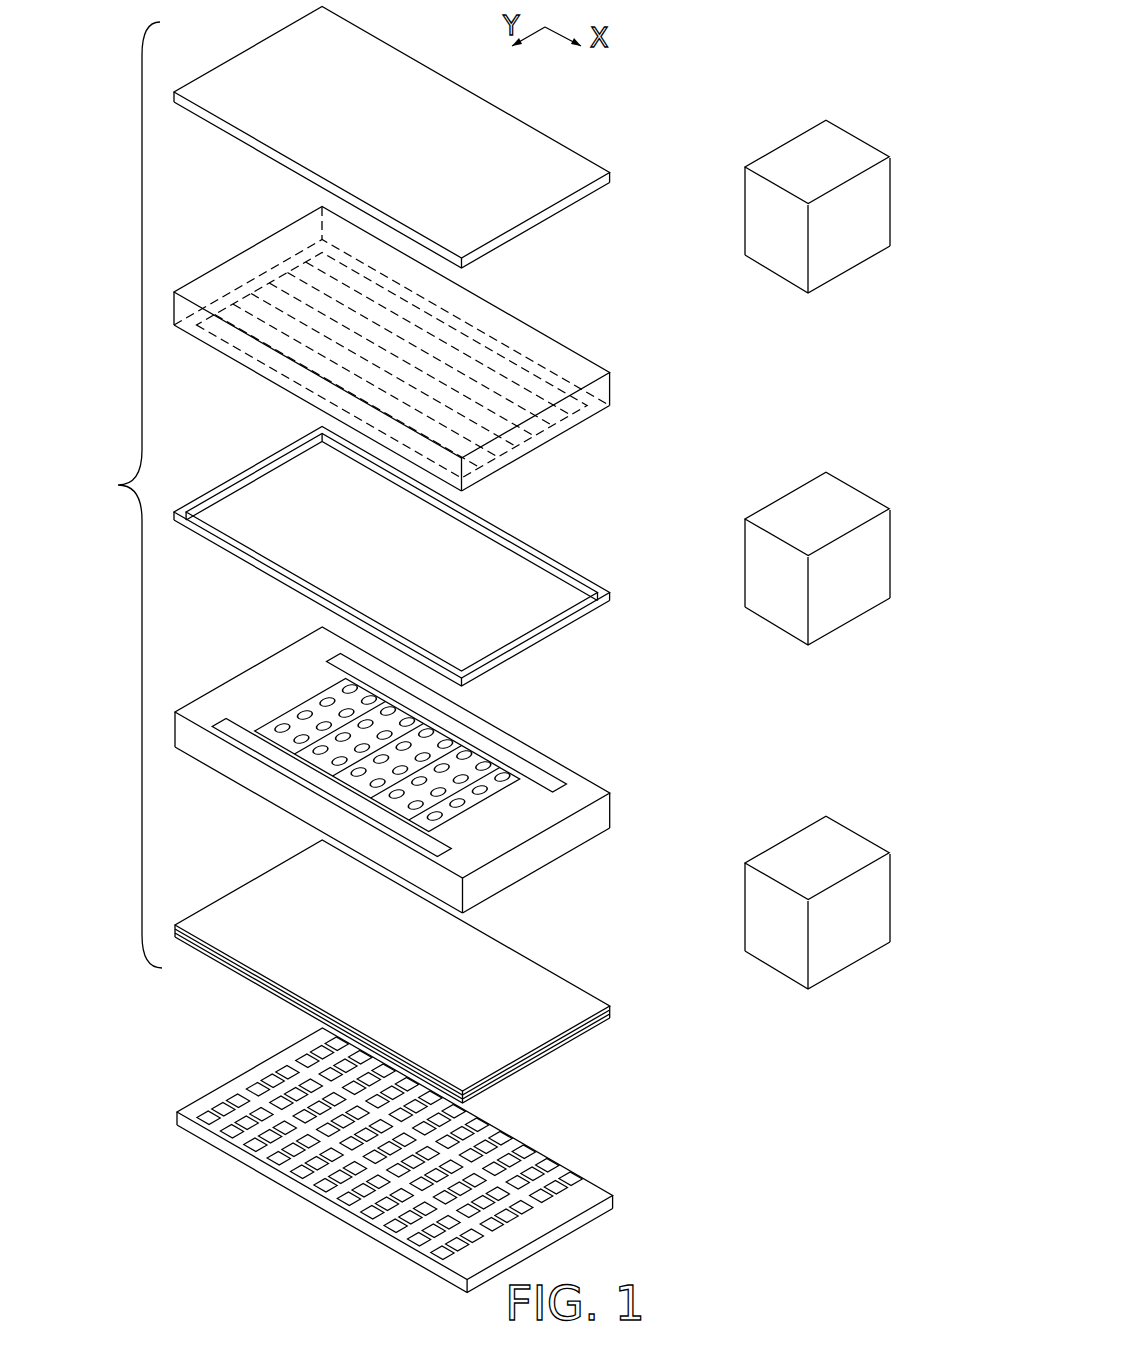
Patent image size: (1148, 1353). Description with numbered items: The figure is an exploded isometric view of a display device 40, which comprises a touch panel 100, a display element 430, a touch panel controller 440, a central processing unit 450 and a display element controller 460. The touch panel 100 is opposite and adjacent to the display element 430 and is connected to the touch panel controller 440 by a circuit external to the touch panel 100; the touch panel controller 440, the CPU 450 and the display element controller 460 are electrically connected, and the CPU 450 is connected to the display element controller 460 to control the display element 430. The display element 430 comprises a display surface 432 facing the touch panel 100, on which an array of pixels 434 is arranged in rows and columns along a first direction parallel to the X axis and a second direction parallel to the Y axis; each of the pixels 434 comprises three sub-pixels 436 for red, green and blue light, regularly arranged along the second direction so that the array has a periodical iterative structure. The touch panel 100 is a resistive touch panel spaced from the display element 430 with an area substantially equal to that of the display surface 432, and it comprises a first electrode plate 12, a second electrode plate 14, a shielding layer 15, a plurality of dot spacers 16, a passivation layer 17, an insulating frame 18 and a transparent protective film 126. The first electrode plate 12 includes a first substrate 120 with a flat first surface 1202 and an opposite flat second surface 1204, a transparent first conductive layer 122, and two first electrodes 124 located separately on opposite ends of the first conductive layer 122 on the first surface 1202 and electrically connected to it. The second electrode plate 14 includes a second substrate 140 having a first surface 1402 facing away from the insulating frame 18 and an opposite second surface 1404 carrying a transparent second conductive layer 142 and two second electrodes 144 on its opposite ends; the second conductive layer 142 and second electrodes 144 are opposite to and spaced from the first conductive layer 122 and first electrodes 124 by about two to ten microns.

The touch panel 100 is at (118, 485).
The display device 40 is at (398, 18).
The transparent protective film 126 is at (540, 160).
The first electrode plate 12 is at (443, 342).
The first substrate 120 is at (612, 388).
The second surface 1204 is at (518, 343).
The first surface 1202 is at (596, 424).
The first conductive layer 122 is at (447, 345).
The first electrodes 124 is at (278, 288).
The insulating frame 18 is at (555, 566).
The second electrode plate 14 is at (424, 780).
The second surface 1404 is at (590, 790).
The first surface 1402 is at (596, 850).
The second substrate 140 is at (185, 745).
The second conductive layer 142 is at (305, 700).
The second electrodes 144 is at (488, 740).
The dot spacers 16 is at (505, 775).
The shielding layer 15 is at (612, 1010).
The passivation layer 17 is at (585, 1028).
The display element 430 is at (407, 1160).
The display surface 432 is at (195, 1107).
The pixels 434 is at (545, 1225).
The sub-pixels 436 is at (585, 1190).
The touch panel controller 440 is at (810, 150).
The central processing unit 450 is at (810, 505).
The display element controller 460 is at (810, 855).